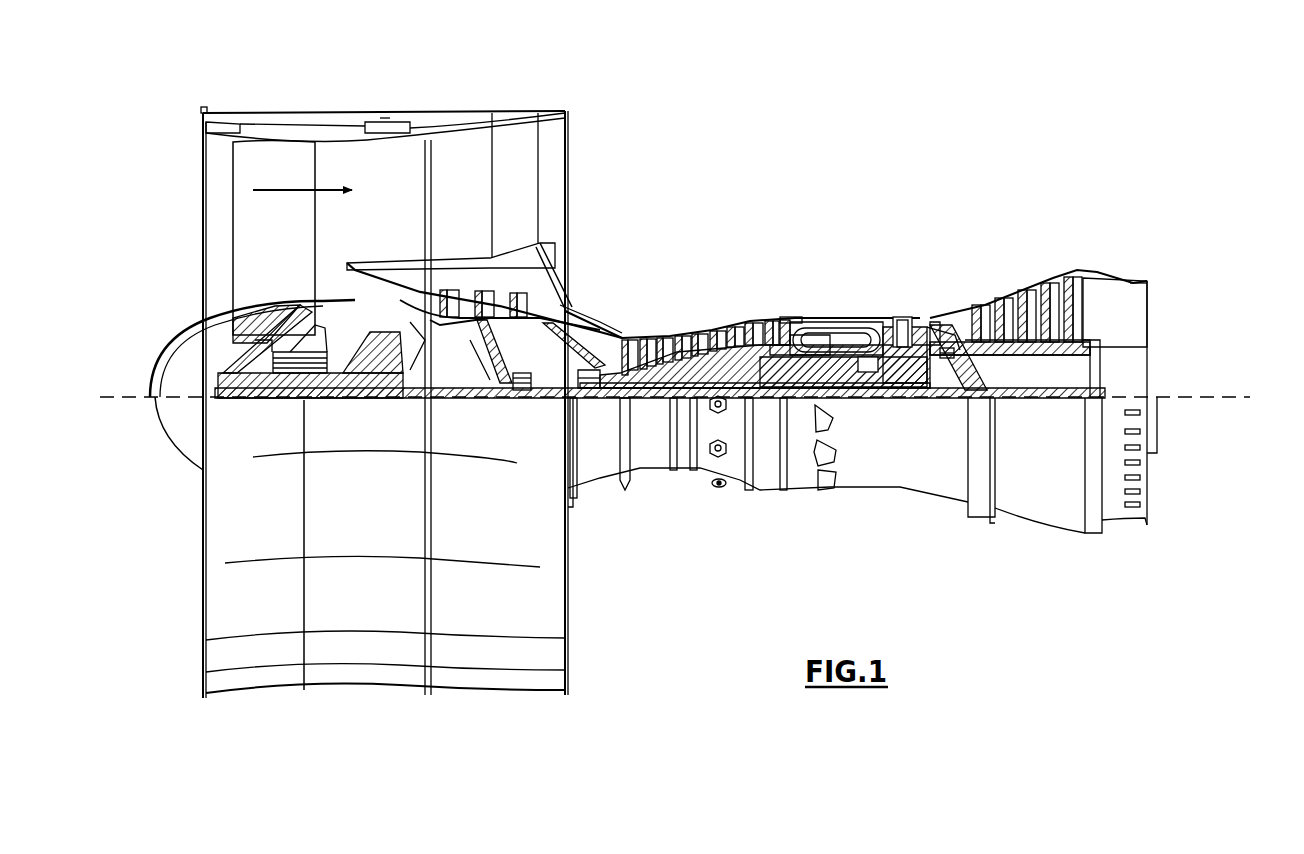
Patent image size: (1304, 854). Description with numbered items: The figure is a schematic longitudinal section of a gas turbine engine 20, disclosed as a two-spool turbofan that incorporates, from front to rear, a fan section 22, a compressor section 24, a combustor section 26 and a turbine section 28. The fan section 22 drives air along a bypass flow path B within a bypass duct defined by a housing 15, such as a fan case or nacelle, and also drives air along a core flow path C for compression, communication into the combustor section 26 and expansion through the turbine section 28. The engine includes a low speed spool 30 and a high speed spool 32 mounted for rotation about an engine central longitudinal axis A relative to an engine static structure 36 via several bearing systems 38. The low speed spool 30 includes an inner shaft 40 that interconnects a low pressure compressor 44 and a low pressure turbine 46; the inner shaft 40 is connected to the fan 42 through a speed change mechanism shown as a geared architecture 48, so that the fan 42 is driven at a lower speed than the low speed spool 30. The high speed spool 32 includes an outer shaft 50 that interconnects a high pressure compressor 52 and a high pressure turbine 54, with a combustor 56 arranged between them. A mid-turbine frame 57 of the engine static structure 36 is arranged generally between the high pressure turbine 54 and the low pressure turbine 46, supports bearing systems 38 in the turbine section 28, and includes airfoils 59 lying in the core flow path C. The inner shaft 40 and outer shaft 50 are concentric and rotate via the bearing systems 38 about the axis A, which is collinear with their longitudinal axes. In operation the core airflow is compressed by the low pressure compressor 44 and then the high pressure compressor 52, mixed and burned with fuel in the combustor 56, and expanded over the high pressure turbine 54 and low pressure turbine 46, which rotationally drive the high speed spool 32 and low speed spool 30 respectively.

The housing 15 is at (385, 120).
The gas turbine engine 20 is at (848, 163).
The fan section 22 is at (316, 106).
The compressor section 24 is at (617, 300).
The combustor section 26 is at (838, 292).
The turbine section 28 is at (987, 256).
The low speed spool 30 is at (724, 402).
The high speed spool 32 is at (770, 325).
The engine static structure 36 is at (765, 492).
The bearing systems 38 is at (517, 397).
The inner shaft 40 is at (587, 402).
The fan 42 is at (286, 242).
The low pressure compressor 44 is at (500, 305).
The low pressure turbine 46 is at (1034, 292).
The geared architecture 48 is at (386, 396).
The outer shaft 50 is at (843, 398).
The high pressure compressor 52 is at (706, 338).
The high pressure turbine 54 is at (905, 318).
The combustor 56 is at (840, 340).
The mid-turbine frame 57 is at (948, 318).
The airfoils 59 is at (952, 340).
The engine central longitudinal axis A is at (1240, 397).
The bypass flow path B is at (285, 188).
The core flow path C is at (390, 296).